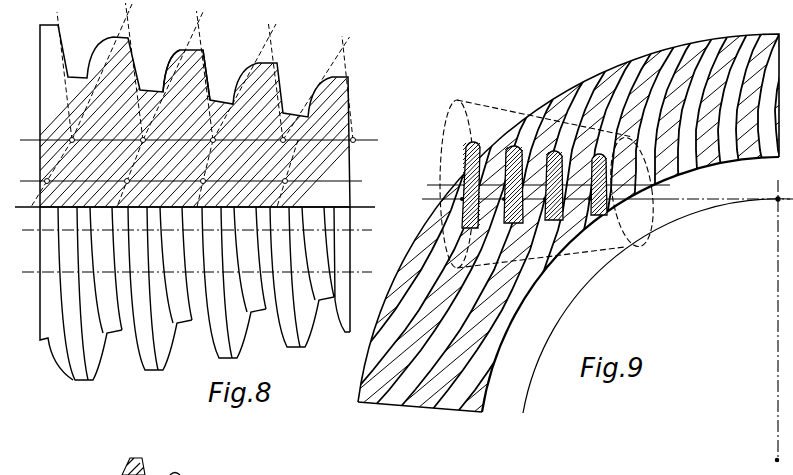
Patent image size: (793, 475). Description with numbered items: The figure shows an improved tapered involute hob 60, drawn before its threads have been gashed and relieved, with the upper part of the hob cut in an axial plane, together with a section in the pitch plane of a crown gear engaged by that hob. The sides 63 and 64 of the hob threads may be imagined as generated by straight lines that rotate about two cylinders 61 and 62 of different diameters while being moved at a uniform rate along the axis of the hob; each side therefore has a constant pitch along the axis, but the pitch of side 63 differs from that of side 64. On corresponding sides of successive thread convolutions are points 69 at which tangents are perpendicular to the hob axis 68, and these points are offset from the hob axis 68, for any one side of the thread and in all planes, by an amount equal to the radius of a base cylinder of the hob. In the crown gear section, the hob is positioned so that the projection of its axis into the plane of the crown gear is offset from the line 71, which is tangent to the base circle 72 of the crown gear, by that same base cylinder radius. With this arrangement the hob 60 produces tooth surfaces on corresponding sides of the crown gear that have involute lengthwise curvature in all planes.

In FIG. 8, the taper hob 60 is at (47, 342).
In FIG. 9, the taper hob 60 is at (453, 137).
In FIG. 8, the cylinder 61 is at (372, 172).
In FIG. 8, the cylinder 62 is at (367, 139).
In FIG. 8, the side of hob thread 63 is at (174, 64).
In FIG. 8, the side of hob thread 64 is at (208, 77).
In FIG. 8, the hob axis 68 is at (382, 199).
In FIG. 9, the hob axis 68 is at (438, 185).
In FIG. 9, the points 69 is at (445, 203).
In FIG. 9, the line 71 is at (688, 199).
In FIG. 9, the base circle 72 is at (577, 292).